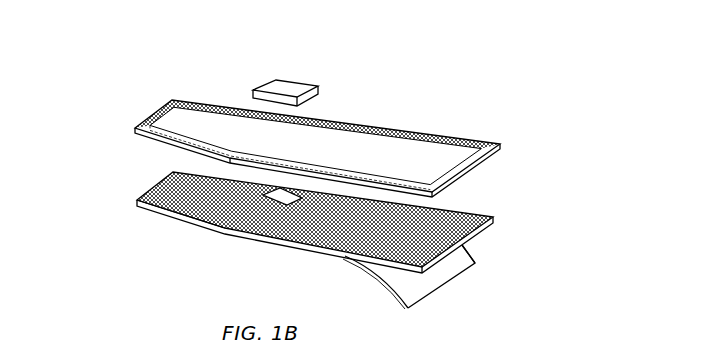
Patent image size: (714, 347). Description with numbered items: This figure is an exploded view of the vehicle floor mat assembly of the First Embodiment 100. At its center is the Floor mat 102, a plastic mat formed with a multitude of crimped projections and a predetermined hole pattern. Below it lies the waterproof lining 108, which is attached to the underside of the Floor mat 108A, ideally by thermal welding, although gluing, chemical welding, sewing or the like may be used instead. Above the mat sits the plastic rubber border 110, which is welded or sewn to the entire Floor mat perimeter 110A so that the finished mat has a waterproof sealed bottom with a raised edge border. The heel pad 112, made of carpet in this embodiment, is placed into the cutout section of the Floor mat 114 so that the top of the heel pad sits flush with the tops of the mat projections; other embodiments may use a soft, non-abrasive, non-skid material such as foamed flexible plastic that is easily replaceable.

The First Embodiment 100 is at (136, 48).
The Floor mat 102 is at (277, 179).
The waterproof lining 108 is at (443, 274).
The underside of the Floor mat 108A is at (478, 237).
The plastic rubber border 110 is at (139, 126).
The Floor mat perimeter 110A is at (218, 228).
The heel pad 112 is at (277, 83).
The cutout section of the Floor mat 114 is at (296, 193).